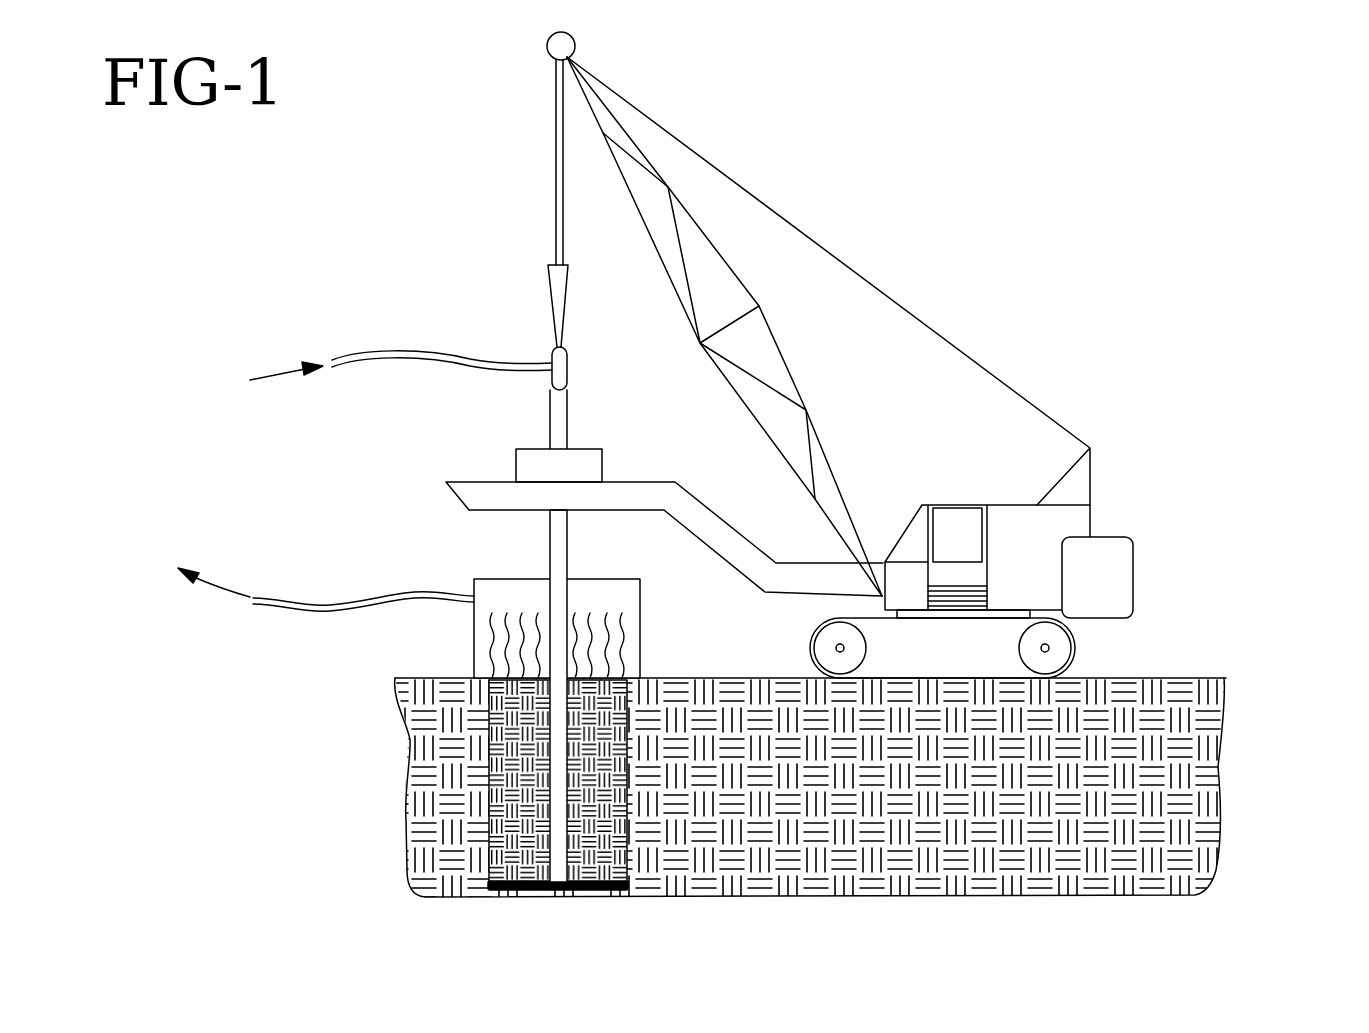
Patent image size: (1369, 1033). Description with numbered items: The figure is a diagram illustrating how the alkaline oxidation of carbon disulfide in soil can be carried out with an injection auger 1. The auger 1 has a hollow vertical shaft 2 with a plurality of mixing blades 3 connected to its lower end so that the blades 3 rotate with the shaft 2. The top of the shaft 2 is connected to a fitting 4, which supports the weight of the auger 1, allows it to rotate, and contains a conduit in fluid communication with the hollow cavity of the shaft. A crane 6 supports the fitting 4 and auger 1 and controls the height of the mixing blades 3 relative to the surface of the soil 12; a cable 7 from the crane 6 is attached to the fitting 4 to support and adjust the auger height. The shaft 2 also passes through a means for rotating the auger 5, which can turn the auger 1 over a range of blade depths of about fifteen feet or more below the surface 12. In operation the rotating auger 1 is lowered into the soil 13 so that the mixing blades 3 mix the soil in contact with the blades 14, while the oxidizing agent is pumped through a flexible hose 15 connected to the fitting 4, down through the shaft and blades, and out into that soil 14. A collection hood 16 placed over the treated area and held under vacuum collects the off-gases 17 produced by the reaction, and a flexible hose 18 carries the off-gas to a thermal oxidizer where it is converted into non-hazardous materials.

The injection auger 1 is at (553, 539).
The hollow vertical shaft 2 is at (449, 781).
The mixing blades 3 is at (517, 883).
The fitting 4 is at (562, 367).
The means for rotating the auger 5 is at (592, 463).
The crane 6 is at (1073, 523).
The cable 7 is at (558, 157).
The surface of the soil 12 is at (432, 677).
The soil 13 is at (1210, 716).
The soil in contact with the blades 14 is at (507, 813).
The flexible hose 15 is at (416, 353).
The collection hood 16 is at (620, 597).
The off-gases 17 is at (628, 626).
The flexible hose 18 is at (382, 606).